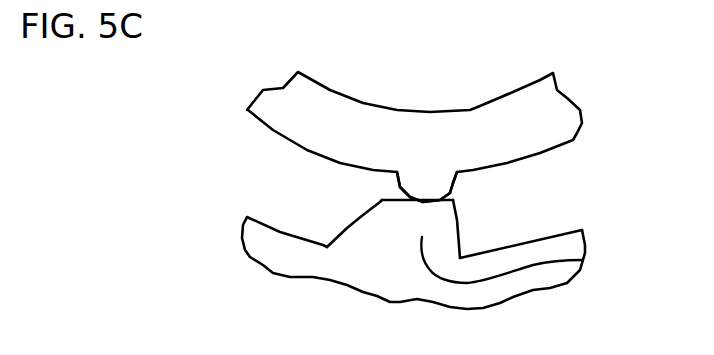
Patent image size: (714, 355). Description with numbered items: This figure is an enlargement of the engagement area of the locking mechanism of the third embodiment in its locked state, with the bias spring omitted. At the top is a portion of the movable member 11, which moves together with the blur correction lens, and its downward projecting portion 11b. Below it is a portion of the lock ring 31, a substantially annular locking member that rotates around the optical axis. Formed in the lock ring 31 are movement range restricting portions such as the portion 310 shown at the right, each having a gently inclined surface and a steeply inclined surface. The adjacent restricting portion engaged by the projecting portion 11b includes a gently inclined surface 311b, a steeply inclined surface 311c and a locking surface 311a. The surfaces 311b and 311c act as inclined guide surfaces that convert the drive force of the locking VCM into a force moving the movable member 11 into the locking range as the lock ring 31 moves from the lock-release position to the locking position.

The movable member 11 is at (542, 122).
The projecting portion 11b is at (432, 192).
The lock ring 31 is at (262, 246).
The movement range restricting portion 310 is at (583, 260).
The locking surface 311a is at (453, 199).
The gently inclined surface 311b is at (382, 201).
The steeply inclined surface 311c is at (348, 227).